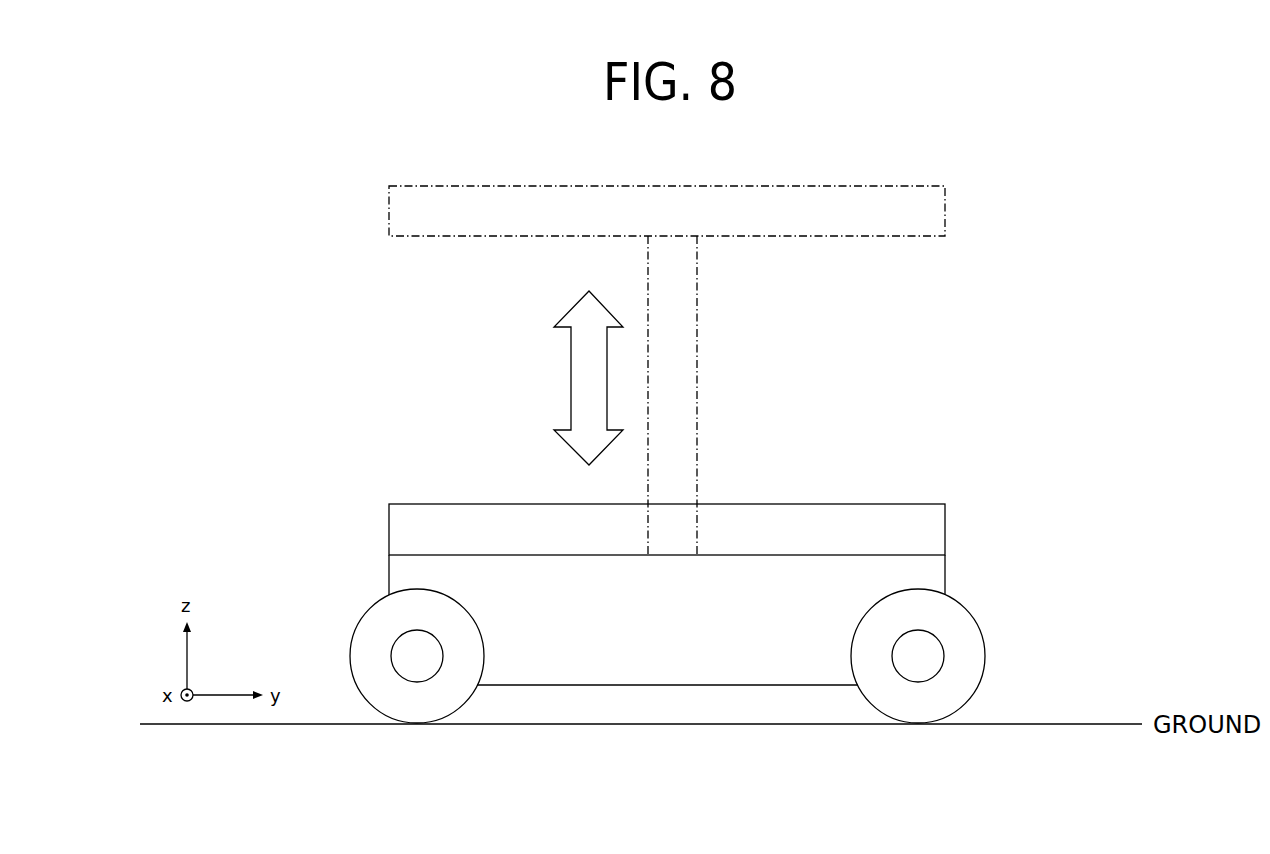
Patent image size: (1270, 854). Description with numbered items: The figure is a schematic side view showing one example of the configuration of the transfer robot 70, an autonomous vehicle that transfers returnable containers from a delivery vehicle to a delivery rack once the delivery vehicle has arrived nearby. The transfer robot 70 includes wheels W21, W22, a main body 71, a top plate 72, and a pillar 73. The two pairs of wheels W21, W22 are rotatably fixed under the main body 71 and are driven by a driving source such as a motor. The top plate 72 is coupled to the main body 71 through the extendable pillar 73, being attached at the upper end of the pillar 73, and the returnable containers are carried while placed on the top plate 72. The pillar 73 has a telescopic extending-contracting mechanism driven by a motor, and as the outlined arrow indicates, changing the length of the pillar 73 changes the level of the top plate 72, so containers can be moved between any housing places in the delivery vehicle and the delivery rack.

The transfer robot 70 is at (1072, 256).
The main body 71 is at (945, 578).
The top plate 72 is at (945, 217).
The pillar 73 is at (697, 427).
The wheel W21 is at (985, 656).
The wheel W22 is at (351, 644).